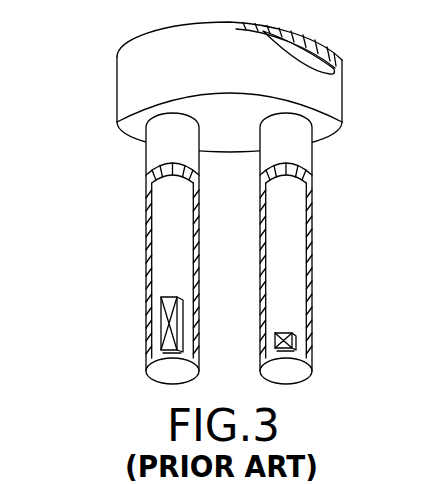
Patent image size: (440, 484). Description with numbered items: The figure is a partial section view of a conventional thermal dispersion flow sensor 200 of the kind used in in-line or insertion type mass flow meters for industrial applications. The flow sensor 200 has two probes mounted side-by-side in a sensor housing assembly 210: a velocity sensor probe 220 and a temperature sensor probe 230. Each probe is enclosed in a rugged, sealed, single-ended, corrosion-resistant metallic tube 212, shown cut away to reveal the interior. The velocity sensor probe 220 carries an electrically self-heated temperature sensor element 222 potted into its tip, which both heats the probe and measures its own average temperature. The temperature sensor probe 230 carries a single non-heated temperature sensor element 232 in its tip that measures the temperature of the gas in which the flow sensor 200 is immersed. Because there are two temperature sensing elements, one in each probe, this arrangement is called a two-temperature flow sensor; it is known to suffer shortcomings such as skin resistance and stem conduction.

The thermal dispersion flow sensor 200 is at (224, 208).
The sensor housing assembly 210 is at (100, 123).
The metallic tube 212 is at (231, 253).
The velocity sensor probe 220 is at (132, 253).
The temperature sensor element 222 is at (161, 348).
The temperature sensor probe 230 is at (331, 248).
The temperature sensor element 232 is at (296, 340).